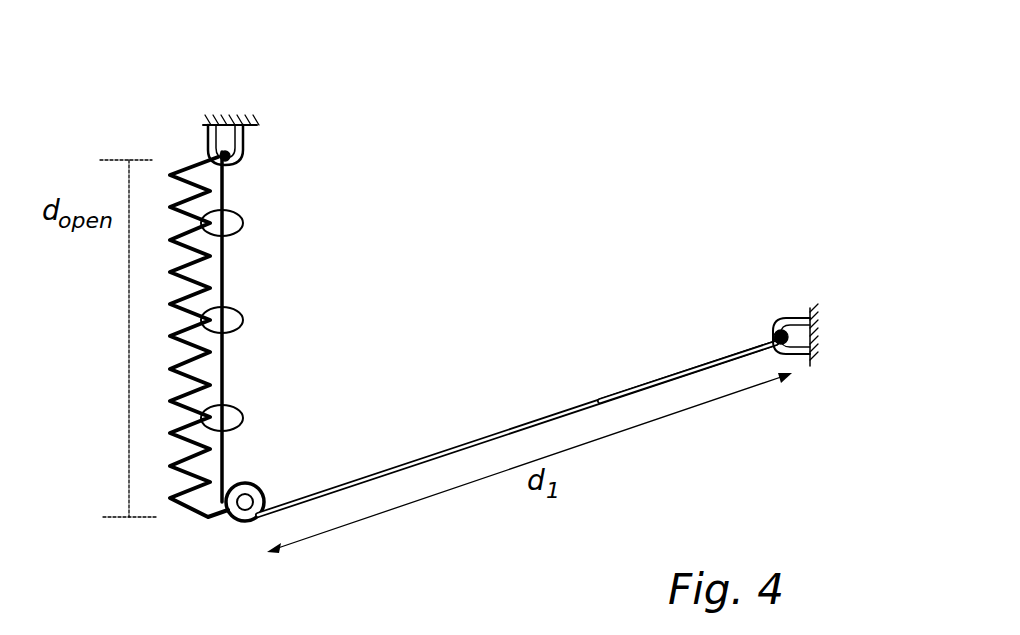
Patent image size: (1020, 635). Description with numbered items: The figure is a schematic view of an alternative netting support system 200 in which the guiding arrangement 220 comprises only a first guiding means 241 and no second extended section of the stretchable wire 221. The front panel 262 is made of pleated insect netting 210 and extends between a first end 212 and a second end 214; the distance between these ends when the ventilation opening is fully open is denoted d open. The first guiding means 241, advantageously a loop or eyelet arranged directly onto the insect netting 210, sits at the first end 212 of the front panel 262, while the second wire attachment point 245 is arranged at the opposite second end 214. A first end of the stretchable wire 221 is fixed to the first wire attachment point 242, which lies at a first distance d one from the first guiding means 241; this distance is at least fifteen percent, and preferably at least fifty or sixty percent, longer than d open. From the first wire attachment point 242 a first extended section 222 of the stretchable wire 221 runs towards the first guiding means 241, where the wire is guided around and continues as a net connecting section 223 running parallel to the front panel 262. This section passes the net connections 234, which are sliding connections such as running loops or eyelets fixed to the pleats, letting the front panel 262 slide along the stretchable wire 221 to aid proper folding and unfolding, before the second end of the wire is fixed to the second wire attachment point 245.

The netting support system 200 is at (482, 157).
The insect netting 210 is at (170, 296).
The first end of the front panel 212 is at (208, 527).
The second end of the front panel 214 is at (192, 137).
The guiding arrangement 220 is at (710, 435).
The stretchable wire 221 is at (681, 372).
The first extended section 222 is at (433, 455).
The net connecting section 223 is at (228, 288).
The net connection 234 is at (243, 226).
The first guiding means 241 is at (263, 491).
The first wire attachment point 242 is at (801, 316).
The second wire attachment point 245 is at (244, 140).
The front panel 262 is at (157, 385).